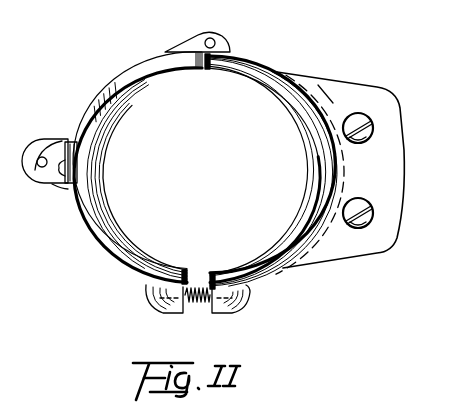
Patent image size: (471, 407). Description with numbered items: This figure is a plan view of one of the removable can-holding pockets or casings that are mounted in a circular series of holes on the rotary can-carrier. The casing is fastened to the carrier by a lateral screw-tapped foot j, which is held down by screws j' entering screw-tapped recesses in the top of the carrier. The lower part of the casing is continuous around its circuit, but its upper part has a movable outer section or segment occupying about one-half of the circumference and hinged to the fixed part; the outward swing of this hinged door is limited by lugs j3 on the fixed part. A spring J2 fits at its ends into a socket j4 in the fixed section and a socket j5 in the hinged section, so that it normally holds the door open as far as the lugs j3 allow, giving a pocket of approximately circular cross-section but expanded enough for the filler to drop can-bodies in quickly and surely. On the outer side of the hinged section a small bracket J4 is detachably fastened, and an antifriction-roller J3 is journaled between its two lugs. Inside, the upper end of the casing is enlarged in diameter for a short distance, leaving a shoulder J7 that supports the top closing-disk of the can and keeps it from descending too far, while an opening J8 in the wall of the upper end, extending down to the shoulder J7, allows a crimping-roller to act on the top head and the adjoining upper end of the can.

The opening J8 is at (127, 80).
The lugs j3 is at (186, 48).
The antifriction-roller J3 is at (38, 138).
The bracket J4 is at (55, 146).
The shoulder J7 is at (92, 198).
The screws j' is at (390, 170).
The foot j is at (317, 182).
The socket j4 is at (163, 305).
The spring J2 is at (203, 307).
The socket j5 is at (233, 303).